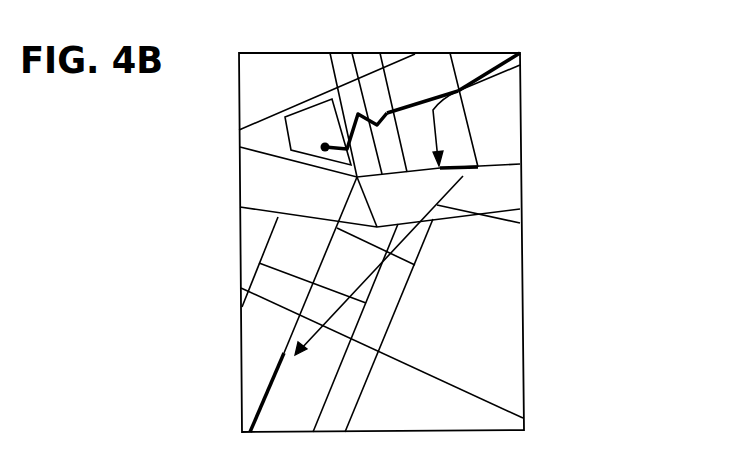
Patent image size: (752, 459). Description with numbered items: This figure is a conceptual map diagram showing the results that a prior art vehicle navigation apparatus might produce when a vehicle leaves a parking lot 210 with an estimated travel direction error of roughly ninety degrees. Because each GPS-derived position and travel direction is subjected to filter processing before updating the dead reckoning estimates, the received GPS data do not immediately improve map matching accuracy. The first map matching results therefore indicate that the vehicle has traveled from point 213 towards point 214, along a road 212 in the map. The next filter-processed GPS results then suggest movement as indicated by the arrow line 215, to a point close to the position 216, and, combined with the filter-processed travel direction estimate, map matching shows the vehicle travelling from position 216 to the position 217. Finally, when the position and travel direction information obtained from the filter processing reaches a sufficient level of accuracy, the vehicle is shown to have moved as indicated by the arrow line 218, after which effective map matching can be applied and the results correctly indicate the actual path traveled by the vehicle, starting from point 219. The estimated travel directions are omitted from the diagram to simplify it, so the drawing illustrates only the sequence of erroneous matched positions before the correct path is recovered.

The parking lot 210 is at (289, 143).
The road 212 is at (443, 380).
The point 213 is at (392, 104).
The point 214 is at (430, 97).
The arrow line 215 is at (520, 53).
The position 216 is at (443, 165).
The position 217 is at (479, 167).
The arrow line 218 is at (440, 206).
The point 219 is at (272, 359).